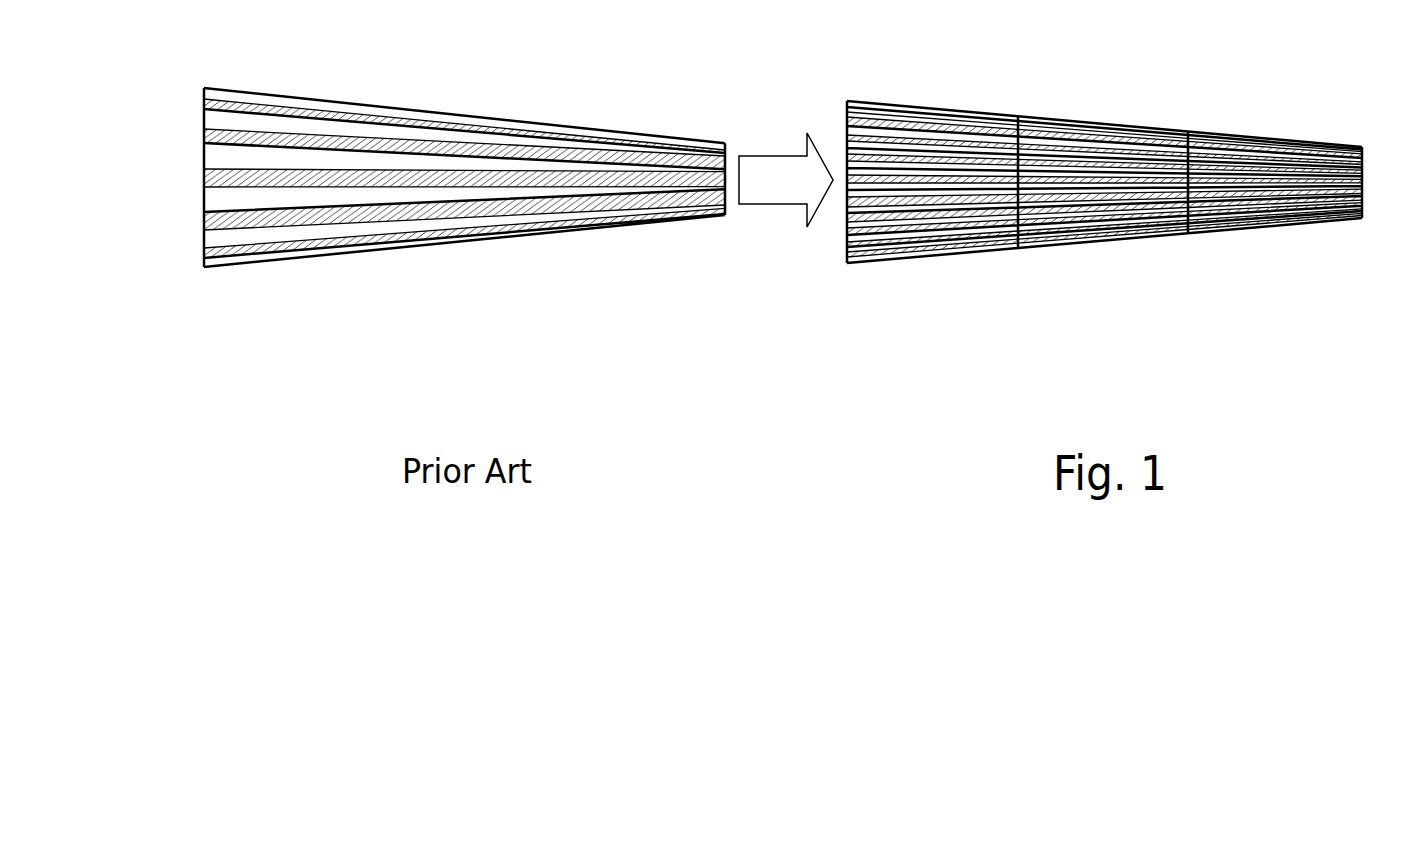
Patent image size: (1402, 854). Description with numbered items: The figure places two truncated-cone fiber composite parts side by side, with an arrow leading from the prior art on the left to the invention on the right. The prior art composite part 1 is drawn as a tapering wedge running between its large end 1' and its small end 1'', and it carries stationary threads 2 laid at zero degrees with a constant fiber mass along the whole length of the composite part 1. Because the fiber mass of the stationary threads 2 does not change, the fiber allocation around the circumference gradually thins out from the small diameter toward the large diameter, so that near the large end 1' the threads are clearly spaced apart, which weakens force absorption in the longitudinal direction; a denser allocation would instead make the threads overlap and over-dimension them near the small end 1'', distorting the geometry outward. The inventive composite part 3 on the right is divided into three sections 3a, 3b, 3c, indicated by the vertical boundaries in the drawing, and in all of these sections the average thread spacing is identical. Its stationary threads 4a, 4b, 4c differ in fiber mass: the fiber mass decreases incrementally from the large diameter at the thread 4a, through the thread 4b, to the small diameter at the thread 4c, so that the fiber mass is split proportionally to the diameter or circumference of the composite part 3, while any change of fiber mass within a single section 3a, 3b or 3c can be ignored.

The composite part 1 is at (474, 206).
The thick end of prior art component 1' is at (200, 227).
The thin end of prior art component 1'' is at (737, 228).
The stationary threads 2 is at (367, 142).
The tapered composite component 3 is at (1104, 207).
The first section 3a is at (932, 161).
The second section 3b is at (1103, 163).
The third section 3c is at (1275, 163).
The stationary thread 4a is at (932, 128).
The stationary thread 4b is at (1106, 140).
The stationary thread 4c is at (1276, 140).